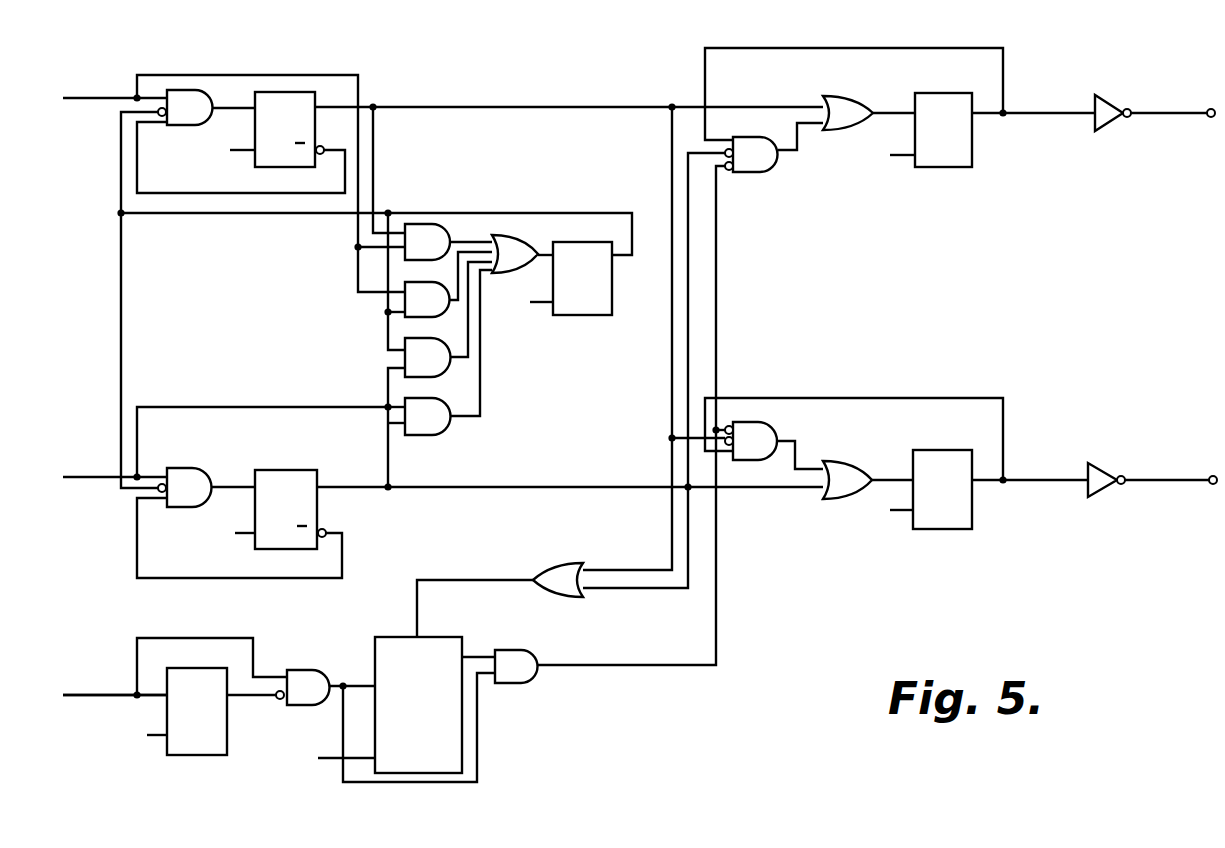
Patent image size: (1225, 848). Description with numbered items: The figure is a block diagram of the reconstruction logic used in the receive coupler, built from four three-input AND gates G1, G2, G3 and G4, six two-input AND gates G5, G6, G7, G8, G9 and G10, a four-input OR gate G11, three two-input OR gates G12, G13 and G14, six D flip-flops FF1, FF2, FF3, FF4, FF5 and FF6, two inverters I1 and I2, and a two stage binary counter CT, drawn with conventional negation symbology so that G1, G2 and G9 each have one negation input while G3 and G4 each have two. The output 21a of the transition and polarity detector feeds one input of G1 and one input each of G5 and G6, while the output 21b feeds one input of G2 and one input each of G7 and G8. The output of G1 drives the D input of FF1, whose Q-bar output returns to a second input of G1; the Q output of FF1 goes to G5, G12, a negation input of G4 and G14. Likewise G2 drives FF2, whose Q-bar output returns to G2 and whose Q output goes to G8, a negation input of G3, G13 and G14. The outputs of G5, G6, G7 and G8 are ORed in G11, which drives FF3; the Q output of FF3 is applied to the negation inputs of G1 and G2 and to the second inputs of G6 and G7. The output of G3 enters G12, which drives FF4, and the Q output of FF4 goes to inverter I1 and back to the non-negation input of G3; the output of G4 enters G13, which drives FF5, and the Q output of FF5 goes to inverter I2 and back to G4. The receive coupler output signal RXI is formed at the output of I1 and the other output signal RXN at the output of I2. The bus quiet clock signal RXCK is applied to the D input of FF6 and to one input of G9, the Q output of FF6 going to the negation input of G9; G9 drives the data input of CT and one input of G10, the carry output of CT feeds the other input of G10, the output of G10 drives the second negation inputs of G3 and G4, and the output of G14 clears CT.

The output of OA1 21a is at (78, 99).
The output of OA2 21b is at (112, 464).
The bus quiet clock signal RXCK is at (107, 686).
The three-input AND gate G1 is at (206, 94).
The three-input AND gate G2 is at (204, 466).
The three-input AND gate G3 is at (760, 173).
The three-input AND gate G4 is at (780, 428).
The two-input AND gate G5 is at (452, 232).
The two-input AND gate G6 is at (428, 320).
The two-input AND gate G7 is at (430, 378).
The two-input AND gate G8 is at (443, 436).
The two-input AND gate G9 is at (300, 668).
The two-input AND gate G10 is at (522, 652).
The four-input OR gate G11 is at (524, 241).
The two-input OR gate G12 is at (840, 97).
The two-input OR gate G13 is at (872, 452).
The two-input OR gate G14 is at (560, 562).
The D flip-flop FF1 is at (258, 167).
The D flip-flop FF2 is at (283, 468).
The D flip-flop FF3 is at (560, 316).
The D flip-flop FF4 is at (930, 168).
The D flip-flop FF5 is at (928, 530).
The D flip-flop FF6 is at (177, 755).
The two stage binary counter CT is at (447, 637).
The inverter I1 is at (1113, 105).
The inverter I2 is at (1106, 473).
The receive coupler output signal RXI is at (1197, 103).
The receive coupler output signal RXN is at (1197, 472).